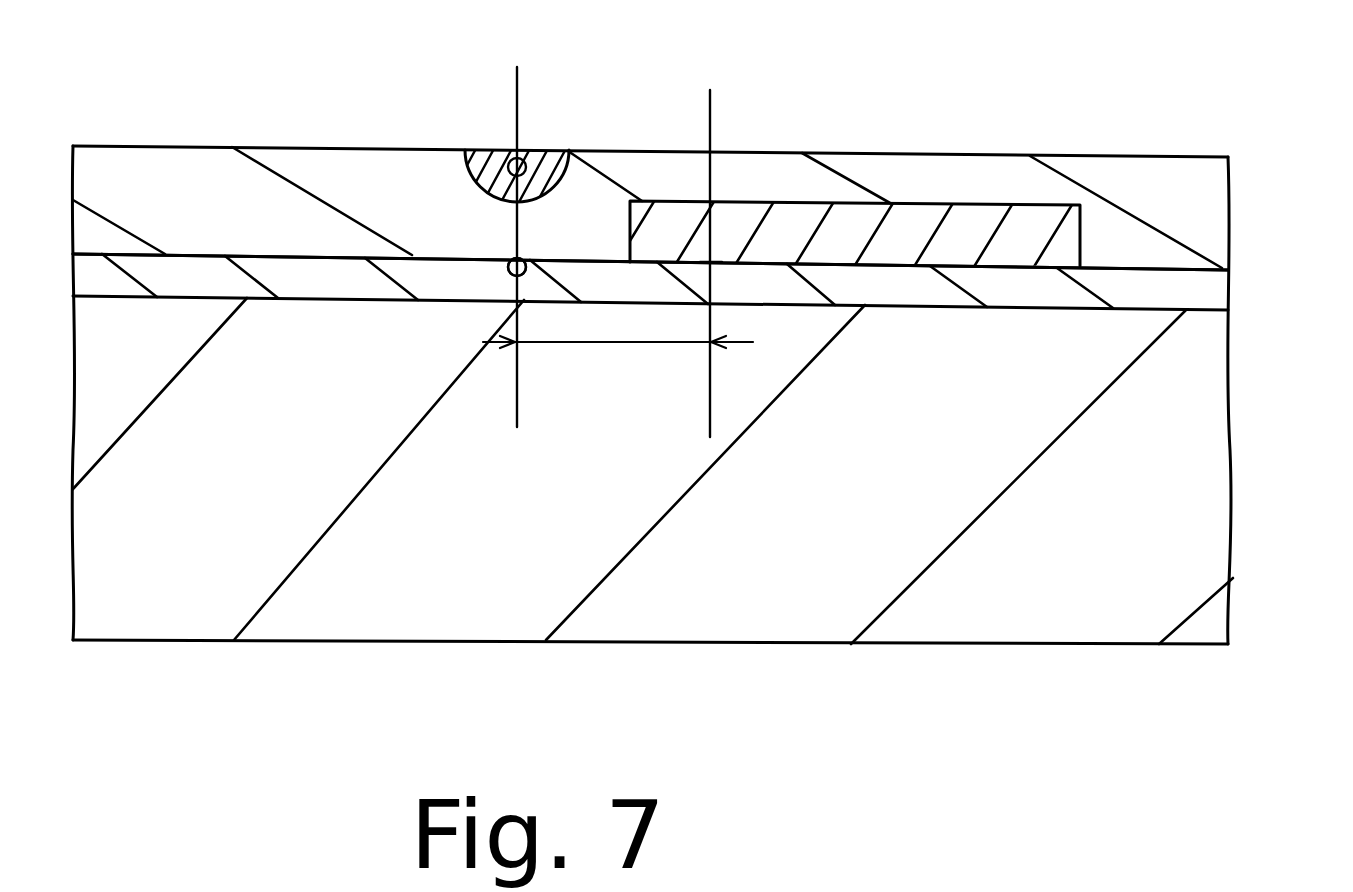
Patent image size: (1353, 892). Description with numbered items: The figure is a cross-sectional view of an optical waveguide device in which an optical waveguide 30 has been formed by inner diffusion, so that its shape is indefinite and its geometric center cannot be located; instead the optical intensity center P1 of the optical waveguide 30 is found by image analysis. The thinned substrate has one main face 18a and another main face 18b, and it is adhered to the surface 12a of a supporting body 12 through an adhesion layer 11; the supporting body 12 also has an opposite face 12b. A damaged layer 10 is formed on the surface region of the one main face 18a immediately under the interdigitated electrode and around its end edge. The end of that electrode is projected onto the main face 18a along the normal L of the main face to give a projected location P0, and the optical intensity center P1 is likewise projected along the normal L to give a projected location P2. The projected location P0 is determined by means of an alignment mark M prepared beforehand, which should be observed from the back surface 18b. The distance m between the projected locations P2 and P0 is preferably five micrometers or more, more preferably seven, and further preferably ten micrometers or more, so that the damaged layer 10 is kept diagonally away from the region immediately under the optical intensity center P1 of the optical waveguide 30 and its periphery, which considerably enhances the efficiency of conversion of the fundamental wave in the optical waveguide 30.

The damaged layer 10 is at (947, 245).
The adhesion layer 11 is at (1208, 287).
The supporting body 12 is at (1197, 486).
The surface of the supporting body 12a is at (1145, 307).
The bottom surface of substrate 12b is at (1127, 644).
The one main face of the substrate 18a is at (1103, 270).
The other main face of the substrate 18b is at (1082, 167).
The optical waveguide 30 is at (553, 150).
The normal of the main face L is at (518, 88).
The projected location of the end of the interdigitated electrode P0 is at (713, 262).
The optical intensity center of the optical waveguide P1 is at (488, 147).
The projected location of the optical intensity center P2 is at (513, 275).
The alignment mark M is at (510, 272).
The distance between projected locations m is at (594, 345).